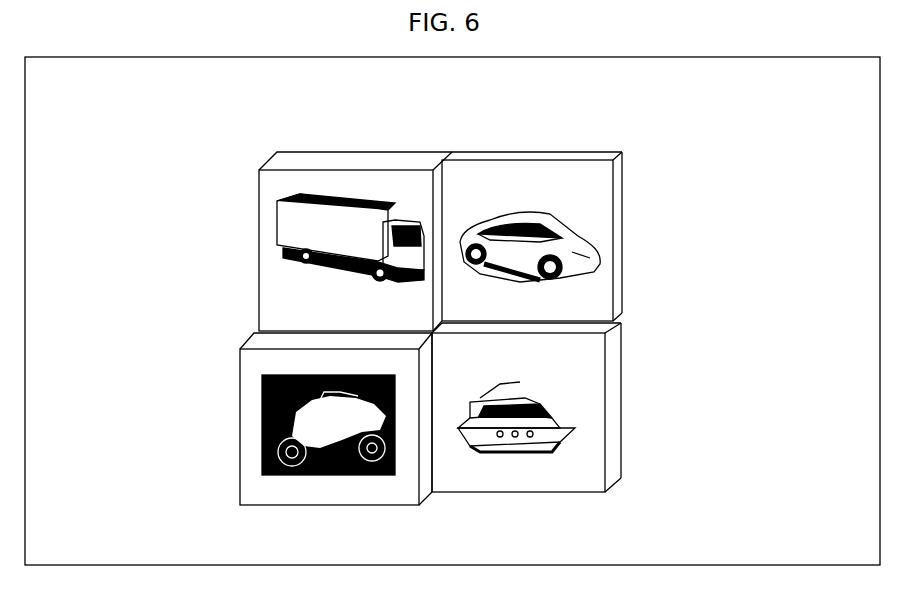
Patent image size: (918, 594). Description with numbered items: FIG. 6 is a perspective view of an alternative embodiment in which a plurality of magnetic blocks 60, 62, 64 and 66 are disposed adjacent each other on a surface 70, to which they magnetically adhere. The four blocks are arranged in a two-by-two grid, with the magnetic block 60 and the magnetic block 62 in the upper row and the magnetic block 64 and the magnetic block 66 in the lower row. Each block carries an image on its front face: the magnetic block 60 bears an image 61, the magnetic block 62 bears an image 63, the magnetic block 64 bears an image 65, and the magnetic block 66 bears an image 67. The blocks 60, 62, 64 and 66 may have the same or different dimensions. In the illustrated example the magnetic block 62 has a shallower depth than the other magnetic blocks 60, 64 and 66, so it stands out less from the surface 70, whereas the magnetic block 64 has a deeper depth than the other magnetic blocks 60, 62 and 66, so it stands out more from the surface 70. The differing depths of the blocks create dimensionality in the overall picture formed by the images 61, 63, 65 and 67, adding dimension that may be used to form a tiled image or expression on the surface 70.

The magnetic block 60 is at (259, 170).
The image 61 is at (290, 278).
The magnetic block 62 is at (583, 193).
The image 63 is at (593, 289).
The magnetic block 64 is at (269, 363).
The image 65 is at (285, 425).
The magnetic block 66 is at (605, 363).
The image 67 is at (545, 462).
The surface 70 is at (772, 240).